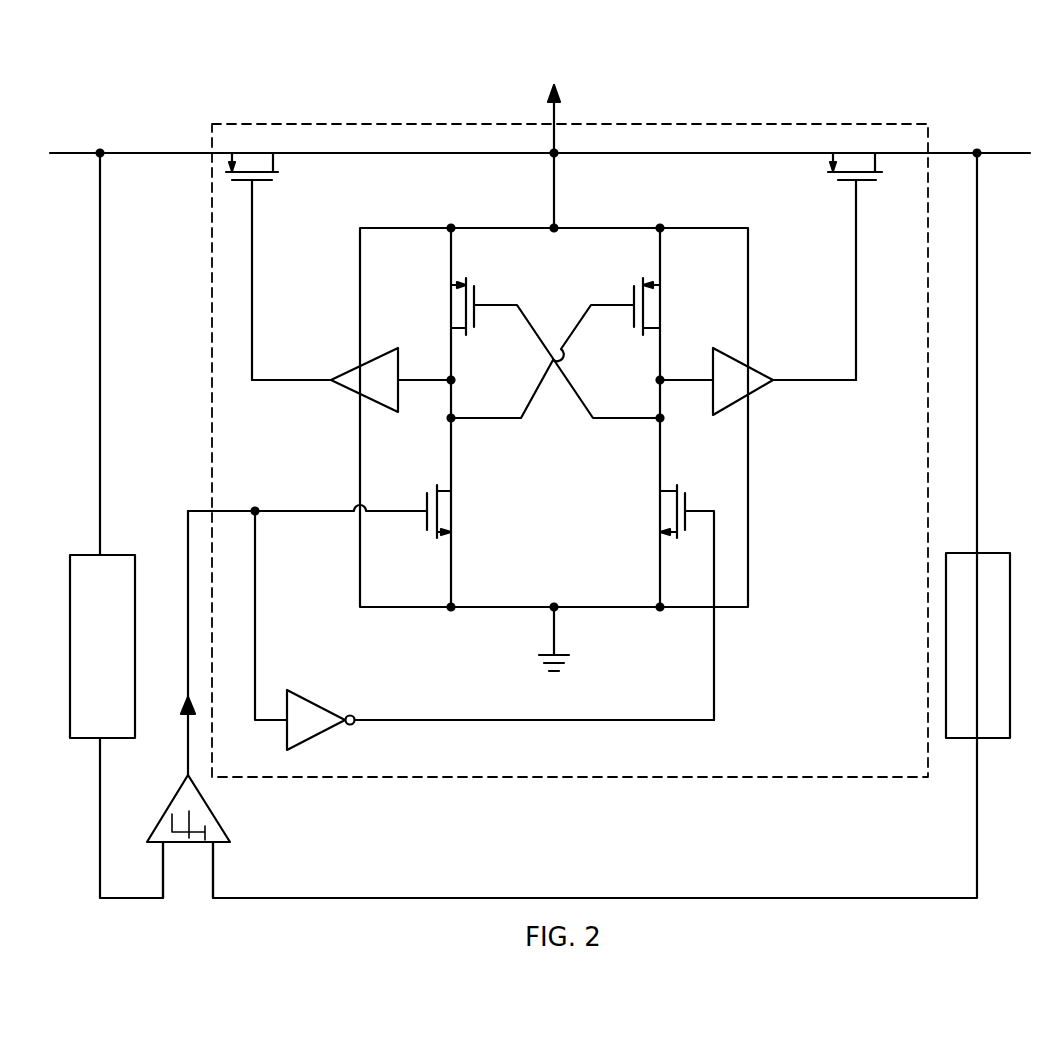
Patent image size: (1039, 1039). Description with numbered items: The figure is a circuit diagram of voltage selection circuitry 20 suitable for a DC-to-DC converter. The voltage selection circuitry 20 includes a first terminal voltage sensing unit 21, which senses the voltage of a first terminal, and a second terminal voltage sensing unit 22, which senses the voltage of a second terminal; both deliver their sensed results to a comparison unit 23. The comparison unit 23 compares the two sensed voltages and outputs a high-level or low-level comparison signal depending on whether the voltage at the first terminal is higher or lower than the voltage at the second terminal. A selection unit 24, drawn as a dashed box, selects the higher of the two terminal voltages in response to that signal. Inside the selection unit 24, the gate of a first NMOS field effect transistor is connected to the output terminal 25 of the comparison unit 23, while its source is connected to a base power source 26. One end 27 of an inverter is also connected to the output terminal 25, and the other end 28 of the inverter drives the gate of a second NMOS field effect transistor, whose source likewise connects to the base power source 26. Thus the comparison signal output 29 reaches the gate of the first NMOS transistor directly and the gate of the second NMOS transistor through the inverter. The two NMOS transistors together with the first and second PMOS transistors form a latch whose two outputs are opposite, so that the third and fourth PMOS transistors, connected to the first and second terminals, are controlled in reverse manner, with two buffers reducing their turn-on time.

The voltage selection circuitry 20 is at (195, 84).
The first terminal voltage sensing unit 21 is at (80, 555).
The second terminal voltage sensing unit 22 is at (987, 553).
The comparison unit 23 is at (222, 823).
The selection unit 24 is at (727, 123).
The output terminal of the comparison unit 25 is at (255, 511).
The base power source 26 is at (554, 228).
The one end of the inverter 27 is at (307, 599).
The other end of the inverter 28 is at (365, 700).
The comparison signal output 29 is at (186, 710).